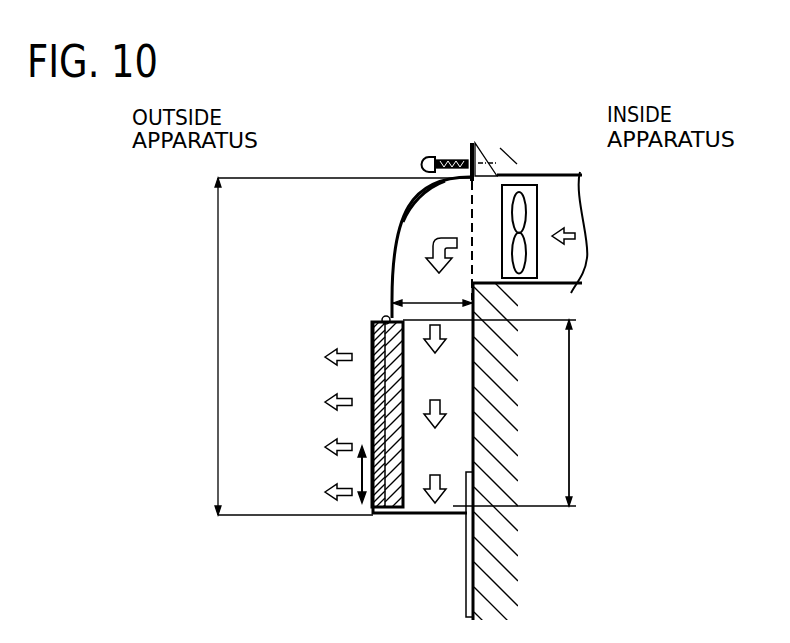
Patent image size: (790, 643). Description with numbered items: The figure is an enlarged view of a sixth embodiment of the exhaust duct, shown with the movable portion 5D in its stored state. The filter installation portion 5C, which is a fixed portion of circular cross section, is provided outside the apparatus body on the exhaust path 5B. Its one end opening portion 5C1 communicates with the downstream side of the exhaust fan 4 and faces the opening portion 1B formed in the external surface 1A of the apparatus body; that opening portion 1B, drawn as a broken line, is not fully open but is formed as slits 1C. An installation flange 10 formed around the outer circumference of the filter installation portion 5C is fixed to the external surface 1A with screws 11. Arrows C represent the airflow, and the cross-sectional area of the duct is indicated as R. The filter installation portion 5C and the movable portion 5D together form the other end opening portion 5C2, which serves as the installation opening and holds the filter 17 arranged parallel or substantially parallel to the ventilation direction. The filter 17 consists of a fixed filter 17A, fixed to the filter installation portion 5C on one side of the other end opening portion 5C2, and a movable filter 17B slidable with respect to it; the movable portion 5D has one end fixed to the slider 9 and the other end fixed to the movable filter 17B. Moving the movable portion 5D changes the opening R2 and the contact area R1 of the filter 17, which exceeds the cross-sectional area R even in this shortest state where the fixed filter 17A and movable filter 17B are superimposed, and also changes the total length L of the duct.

The external surface 1A is at (476, 360).
The opening portion 1B is at (478, 174).
The slits 1C is at (470, 190).
The exhaust fan 4 is at (537, 250).
The exhaust path 5B is at (576, 207).
The filter installation portion 5C is at (393, 250).
The one end opening portion 5C1 is at (413, 213).
The other end opening portion 5C2 is at (385, 316).
The movable portion 5D is at (425, 515).
The slider 9 is at (466, 586).
The installation flange 10 is at (468, 153).
The screws 11 is at (445, 158).
The filter 17 is at (288, 320).
The fixed filter 17A is at (395, 380).
The movable filter 17B is at (375, 332).
The arrows C is at (447, 247).
The total length L is at (339, 346).
The cross-sectional area R is at (432, 294).
The contact area R1 is at (501, 413).
The opening R2 is at (554, 413).